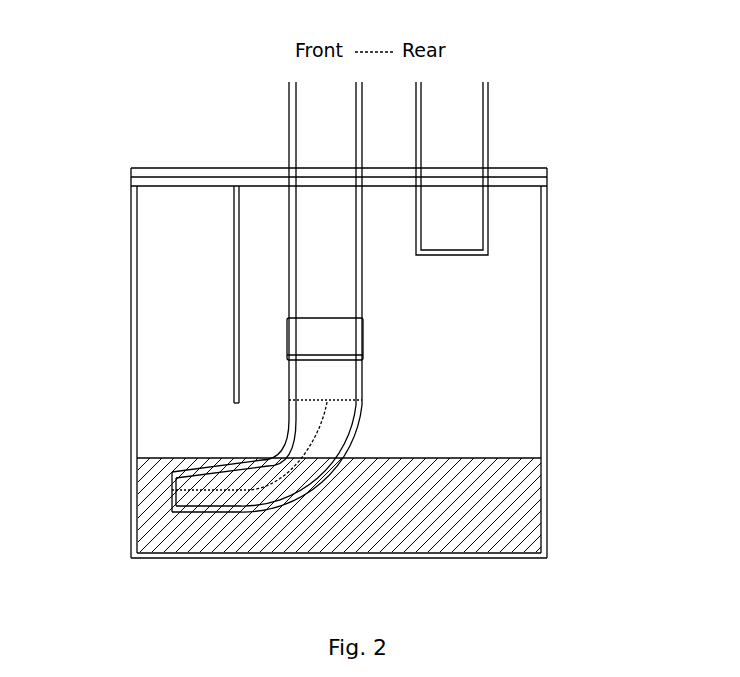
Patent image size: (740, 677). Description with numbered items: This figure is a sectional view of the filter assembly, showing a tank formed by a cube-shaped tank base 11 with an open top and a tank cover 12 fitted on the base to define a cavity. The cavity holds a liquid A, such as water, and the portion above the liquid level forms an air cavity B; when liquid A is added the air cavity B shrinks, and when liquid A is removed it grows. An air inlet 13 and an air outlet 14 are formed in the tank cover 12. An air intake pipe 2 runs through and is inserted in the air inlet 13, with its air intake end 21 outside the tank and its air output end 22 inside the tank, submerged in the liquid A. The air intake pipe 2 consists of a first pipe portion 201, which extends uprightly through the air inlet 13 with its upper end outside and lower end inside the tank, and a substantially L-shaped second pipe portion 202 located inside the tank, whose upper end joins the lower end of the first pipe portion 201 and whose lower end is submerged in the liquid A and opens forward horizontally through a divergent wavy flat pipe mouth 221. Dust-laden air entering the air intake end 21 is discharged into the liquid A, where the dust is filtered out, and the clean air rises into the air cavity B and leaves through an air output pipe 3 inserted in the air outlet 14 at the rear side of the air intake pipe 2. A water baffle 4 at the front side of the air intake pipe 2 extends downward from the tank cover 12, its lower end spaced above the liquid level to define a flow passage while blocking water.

The air intake pipe 2 is at (593, 250).
The first pipe portion 201 is at (358, 293).
The second pipe portion 202 is at (358, 423).
The air intake end 21 is at (314, 98).
The air output end 22 is at (203, 468).
The pipe mouth 221 is at (183, 491).
The air output pipe 3 is at (487, 131).
The water baffle 4 is at (235, 247).
The tank base 11 is at (133, 266).
The tank cover 12 is at (152, 168).
The air inlet 13 is at (322, 167).
The air outlet 14 is at (460, 169).
The liquid A is at (500, 488).
The air cavity B is at (487, 420).